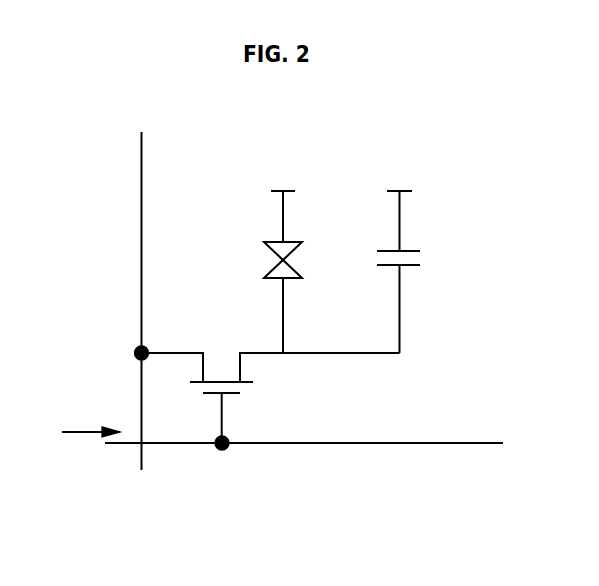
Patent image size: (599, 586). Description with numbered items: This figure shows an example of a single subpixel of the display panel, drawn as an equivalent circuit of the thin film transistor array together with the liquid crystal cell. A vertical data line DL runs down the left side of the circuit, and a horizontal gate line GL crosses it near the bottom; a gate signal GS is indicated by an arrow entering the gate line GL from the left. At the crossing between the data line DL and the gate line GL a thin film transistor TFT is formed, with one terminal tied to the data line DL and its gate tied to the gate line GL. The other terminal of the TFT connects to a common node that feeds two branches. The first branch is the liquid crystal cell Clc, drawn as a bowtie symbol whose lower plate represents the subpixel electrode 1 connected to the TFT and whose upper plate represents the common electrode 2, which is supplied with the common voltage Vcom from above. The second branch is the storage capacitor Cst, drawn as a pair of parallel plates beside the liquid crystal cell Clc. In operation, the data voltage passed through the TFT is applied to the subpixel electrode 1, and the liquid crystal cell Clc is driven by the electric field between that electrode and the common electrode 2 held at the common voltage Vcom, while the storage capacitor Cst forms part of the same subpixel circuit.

The subpixel electrode 1 is at (280, 279).
The common electrode 2 is at (278, 241).
The data line DL is at (141, 199).
The gate line GL is at (406, 443).
The gate signal GS is at (91, 419).
The thin film transistor TFT is at (267, 398).
The liquid crystal cell Clc is at (275, 254).
The storage capacitor Cst is at (418, 272).
The common voltage Vcom is at (264, 199).